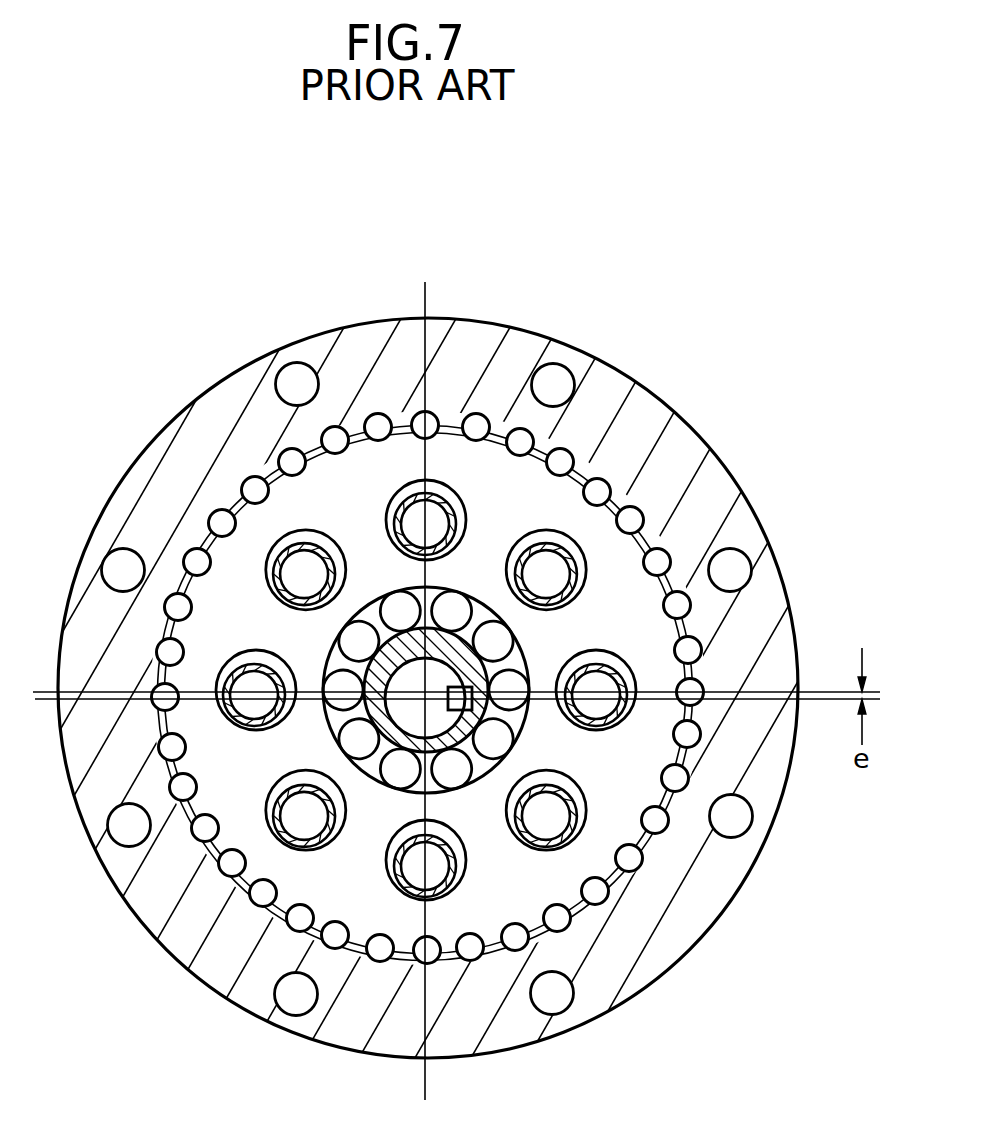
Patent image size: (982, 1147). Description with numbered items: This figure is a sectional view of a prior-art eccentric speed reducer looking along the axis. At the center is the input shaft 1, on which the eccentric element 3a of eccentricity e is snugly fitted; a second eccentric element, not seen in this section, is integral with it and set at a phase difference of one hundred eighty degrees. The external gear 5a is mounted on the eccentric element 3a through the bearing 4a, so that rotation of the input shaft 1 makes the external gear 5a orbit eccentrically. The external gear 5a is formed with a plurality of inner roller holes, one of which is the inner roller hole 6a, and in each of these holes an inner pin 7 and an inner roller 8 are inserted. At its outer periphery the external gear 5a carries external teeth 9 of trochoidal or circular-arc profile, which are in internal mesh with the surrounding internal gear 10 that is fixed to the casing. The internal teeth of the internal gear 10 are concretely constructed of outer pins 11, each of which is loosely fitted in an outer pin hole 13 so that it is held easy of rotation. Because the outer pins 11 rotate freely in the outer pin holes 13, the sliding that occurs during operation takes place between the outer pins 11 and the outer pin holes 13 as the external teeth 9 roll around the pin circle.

The input shaft 1 is at (410, 718).
The eccentric element 3a is at (473, 688).
The bearing 4a is at (497, 648).
The external gear 5a is at (588, 537).
The inner roller hole 6a is at (643, 673).
The inner pin 7 is at (548, 818).
The inner roller 8 is at (538, 845).
The external teeth 9 is at (562, 500).
The internal gear 10 is at (512, 348).
The outer pin 11 is at (373, 418).
The outer pin hole 13 is at (387, 420).